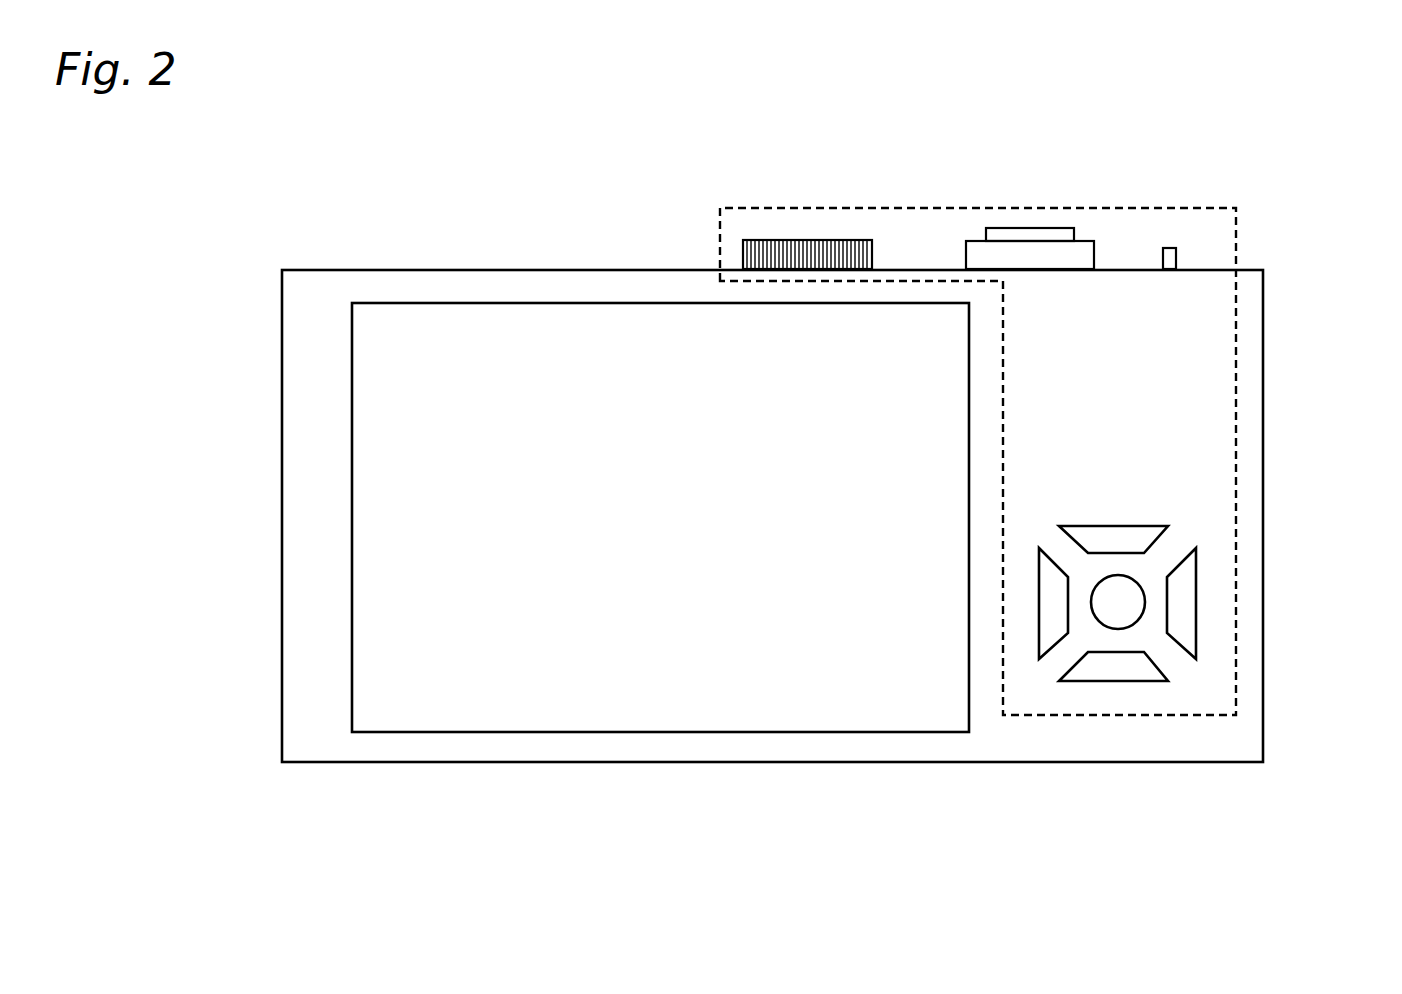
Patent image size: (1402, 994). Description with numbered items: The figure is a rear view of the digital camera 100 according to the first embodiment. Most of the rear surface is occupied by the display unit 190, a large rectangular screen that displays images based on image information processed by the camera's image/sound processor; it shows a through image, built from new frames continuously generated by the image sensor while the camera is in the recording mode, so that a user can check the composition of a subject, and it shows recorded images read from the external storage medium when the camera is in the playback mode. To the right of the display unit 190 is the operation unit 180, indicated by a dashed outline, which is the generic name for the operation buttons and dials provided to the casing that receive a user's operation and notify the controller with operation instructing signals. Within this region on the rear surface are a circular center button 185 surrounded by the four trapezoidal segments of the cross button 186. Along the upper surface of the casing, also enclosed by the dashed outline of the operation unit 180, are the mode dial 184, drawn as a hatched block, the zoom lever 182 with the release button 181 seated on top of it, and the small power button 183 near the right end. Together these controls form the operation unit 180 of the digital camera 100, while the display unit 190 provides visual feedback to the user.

The digital camera 100 is at (425, 168).
The display unit 190 is at (452, 539).
The operation unit 180 is at (1233, 717).
The release button 181 is at (1063, 237).
The zoom lever 182 is at (987, 257).
The power button 183 is at (1169, 255).
The mode dial 184 is at (760, 253).
The center button 185 is at (1126, 600).
The cross button 186 is at (1126, 538).